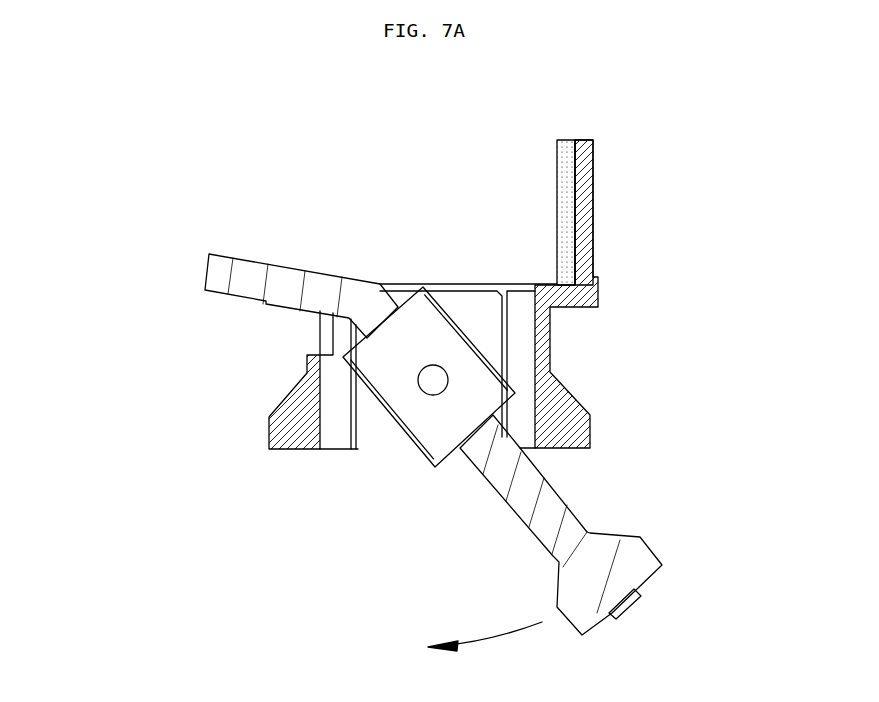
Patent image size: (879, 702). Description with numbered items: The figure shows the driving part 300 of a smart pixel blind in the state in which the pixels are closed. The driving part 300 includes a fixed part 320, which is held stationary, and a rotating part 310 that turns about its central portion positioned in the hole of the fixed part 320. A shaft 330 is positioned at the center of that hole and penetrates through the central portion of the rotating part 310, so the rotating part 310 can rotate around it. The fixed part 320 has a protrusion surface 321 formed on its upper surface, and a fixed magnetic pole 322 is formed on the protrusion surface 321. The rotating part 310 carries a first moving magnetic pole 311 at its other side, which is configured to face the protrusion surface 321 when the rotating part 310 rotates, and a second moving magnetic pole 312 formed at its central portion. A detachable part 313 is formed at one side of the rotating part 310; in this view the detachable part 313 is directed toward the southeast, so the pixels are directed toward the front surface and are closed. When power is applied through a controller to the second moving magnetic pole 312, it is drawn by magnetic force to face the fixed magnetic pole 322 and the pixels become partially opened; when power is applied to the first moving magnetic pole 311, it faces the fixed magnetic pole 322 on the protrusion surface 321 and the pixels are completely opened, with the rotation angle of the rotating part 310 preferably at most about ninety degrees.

The driving part 300 is at (165, 203).
The rotating part 310 is at (562, 517).
The first moving magnetic pole 311 is at (283, 280).
The second moving magnetic pole 312 is at (447, 310).
The detachable part 313 is at (640, 590).
The fixed part 320 is at (550, 342).
The protrusion surface 321 is at (592, 157).
The fixed magnetic pole 322 is at (563, 232).
The shaft 330 is at (427, 382).